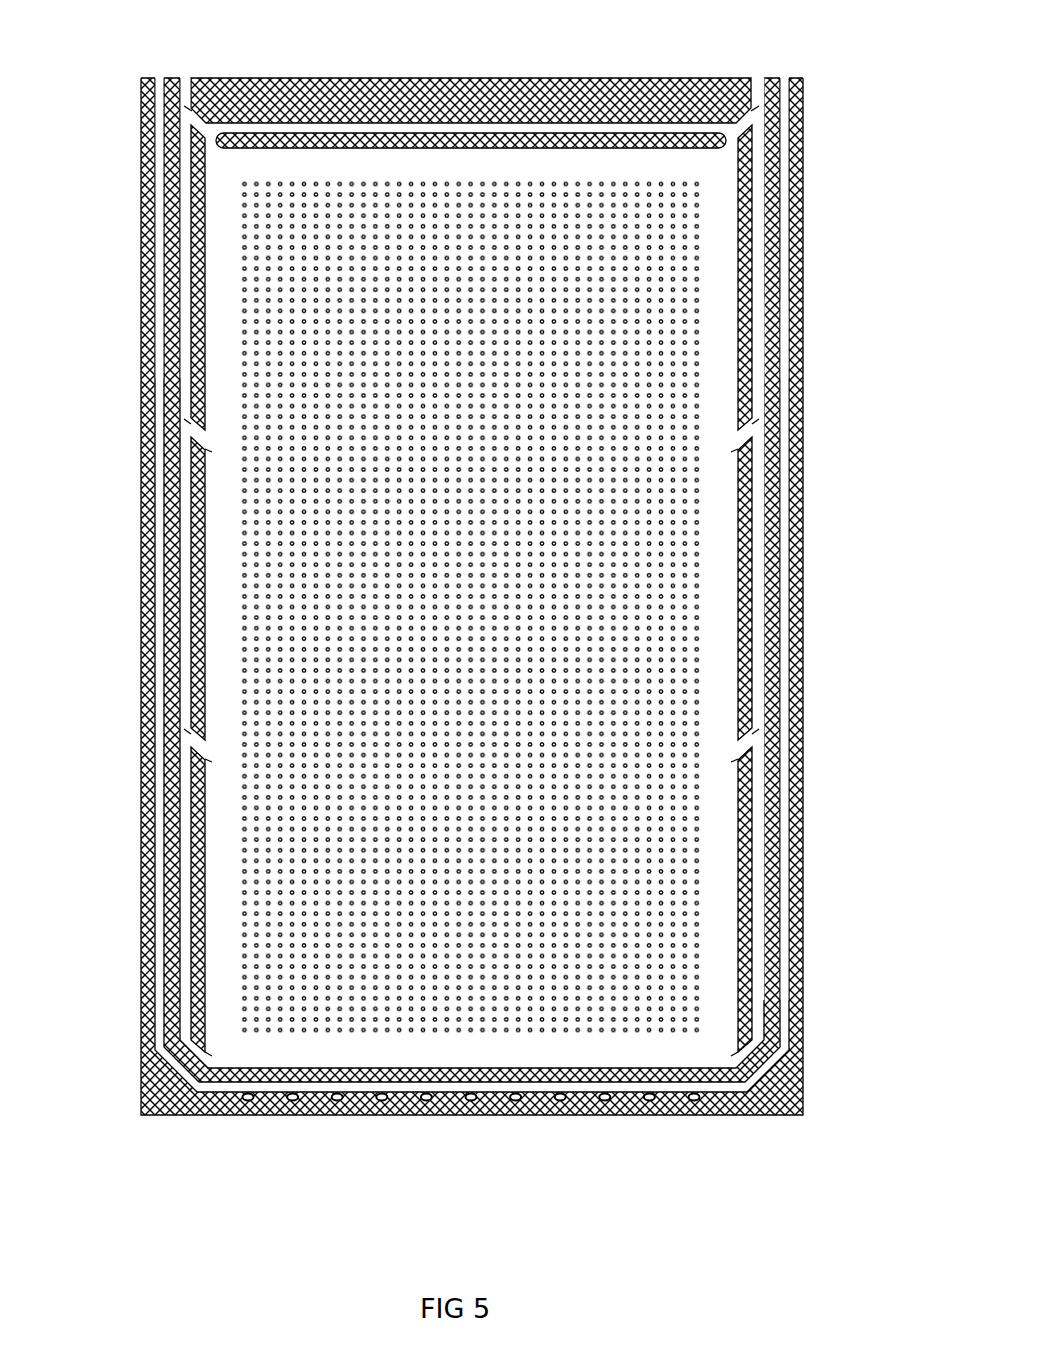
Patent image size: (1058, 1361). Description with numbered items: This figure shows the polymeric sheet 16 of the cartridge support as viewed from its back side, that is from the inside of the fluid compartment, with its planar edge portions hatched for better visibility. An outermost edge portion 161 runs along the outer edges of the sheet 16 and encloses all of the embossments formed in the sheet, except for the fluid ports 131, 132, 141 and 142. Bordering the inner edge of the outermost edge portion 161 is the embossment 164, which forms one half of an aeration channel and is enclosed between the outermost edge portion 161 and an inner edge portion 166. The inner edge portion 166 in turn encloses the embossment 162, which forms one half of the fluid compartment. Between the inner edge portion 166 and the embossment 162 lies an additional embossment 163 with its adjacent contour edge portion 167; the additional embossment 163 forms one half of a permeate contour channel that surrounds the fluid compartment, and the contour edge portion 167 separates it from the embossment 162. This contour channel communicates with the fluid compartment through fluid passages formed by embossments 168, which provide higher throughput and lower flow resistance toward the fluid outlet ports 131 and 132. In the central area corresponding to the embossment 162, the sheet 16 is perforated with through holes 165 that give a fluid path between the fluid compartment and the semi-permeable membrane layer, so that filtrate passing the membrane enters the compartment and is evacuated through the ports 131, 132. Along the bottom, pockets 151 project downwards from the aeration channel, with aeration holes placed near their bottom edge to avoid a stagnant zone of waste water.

The sheet 16 is at (477, 627).
The fluid port 131 is at (757, 74).
The fluid port 132 is at (184, 74).
The fluid port 141 is at (783, 74).
The fluid port 142 is at (160, 74).
The pockets 151 is at (651, 1101).
The outermost edge portion 161 is at (487, 98).
The embossment 162 is at (722, 543).
The additional embossment 163 is at (755, 265).
The embossment 164 is at (783, 358).
The through holes 165 is at (697, 628).
The inner edge portion 166 is at (770, 312).
The contour edge portion 167 is at (521, 140).
The embossments 168 is at (733, 147).